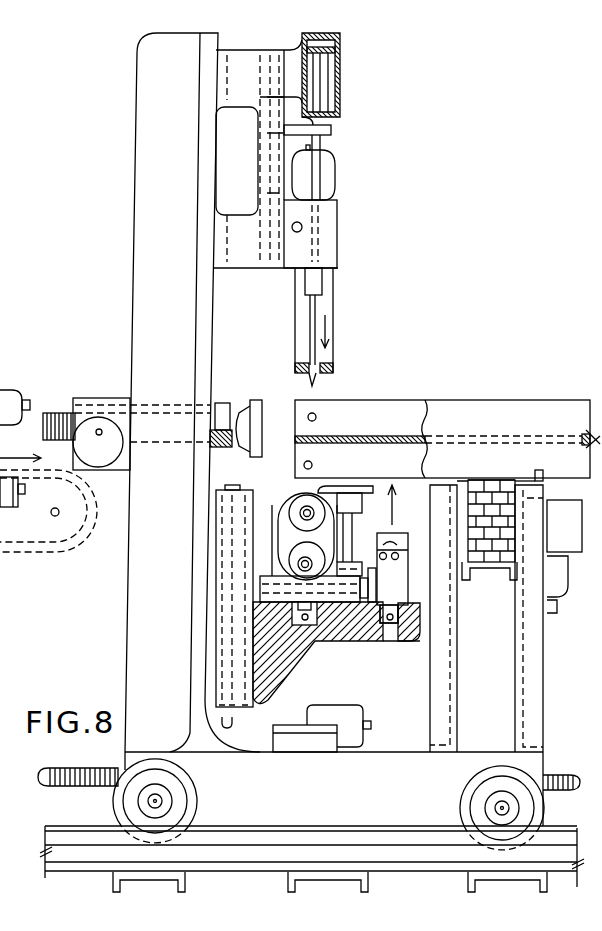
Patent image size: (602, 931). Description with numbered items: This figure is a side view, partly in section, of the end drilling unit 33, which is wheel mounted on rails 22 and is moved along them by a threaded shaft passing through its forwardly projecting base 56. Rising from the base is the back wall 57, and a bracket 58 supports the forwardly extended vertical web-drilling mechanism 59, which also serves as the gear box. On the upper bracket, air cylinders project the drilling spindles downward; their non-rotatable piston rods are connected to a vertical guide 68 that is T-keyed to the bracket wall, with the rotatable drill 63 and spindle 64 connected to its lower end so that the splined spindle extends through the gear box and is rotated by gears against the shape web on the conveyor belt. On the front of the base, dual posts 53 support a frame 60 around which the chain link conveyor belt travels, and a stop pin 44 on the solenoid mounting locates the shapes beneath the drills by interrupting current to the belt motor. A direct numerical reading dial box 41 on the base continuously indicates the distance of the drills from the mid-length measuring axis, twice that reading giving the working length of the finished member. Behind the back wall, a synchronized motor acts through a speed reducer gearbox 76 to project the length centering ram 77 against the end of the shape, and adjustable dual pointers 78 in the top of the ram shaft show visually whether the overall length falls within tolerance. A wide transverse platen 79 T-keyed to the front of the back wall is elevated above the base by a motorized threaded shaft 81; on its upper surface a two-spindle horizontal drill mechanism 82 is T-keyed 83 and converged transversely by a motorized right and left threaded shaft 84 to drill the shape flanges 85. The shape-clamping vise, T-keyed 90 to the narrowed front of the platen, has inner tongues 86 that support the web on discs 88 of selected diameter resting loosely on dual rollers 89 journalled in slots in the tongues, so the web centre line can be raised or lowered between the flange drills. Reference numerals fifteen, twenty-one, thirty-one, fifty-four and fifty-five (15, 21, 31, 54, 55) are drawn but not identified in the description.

The motor 15 is at (110, 459).
The workpiece bar 21 is at (468, 403).
The rails 22 is at (90, 832).
The rack 31 is at (475, 566).
The end drilling unit 33 is at (397, 263).
The direct numerical reading dial box 41 is at (285, 752).
The stop pin 44 is at (534, 472).
The dual posts 53 is at (537, 658).
The latch 54 is at (553, 601).
The control box 55 is at (575, 533).
The base 56 is at (322, 800).
The back wall 57 is at (213, 321).
The bracket 58 is at (224, 278).
The web-drilling mechanism 59 is at (339, 206).
The frame 60 is at (468, 480).
The drill 63 is at (310, 317).
The spindle 64 is at (327, 146).
The vertical guide 68 is at (335, 131).
The speed reducer gearbox 76 is at (130, 459).
The length centering ram 77 is at (250, 403).
The dual pointers 78 is at (63, 412).
The transverse platen 79 is at (348, 641).
The motorized threaded shaft 81 is at (237, 485).
The two-spindle horizontal drill mechanism 82 is at (298, 504).
The T-key 83 is at (312, 641).
The right and left threaded shaft 84 is at (33, 487).
The shape flanges 85 is at (317, 408).
The inner tongues 86 is at (391, 601).
The discs 88 is at (385, 533).
The dual rollers 89 is at (400, 558).
The T-key 90 is at (395, 641).